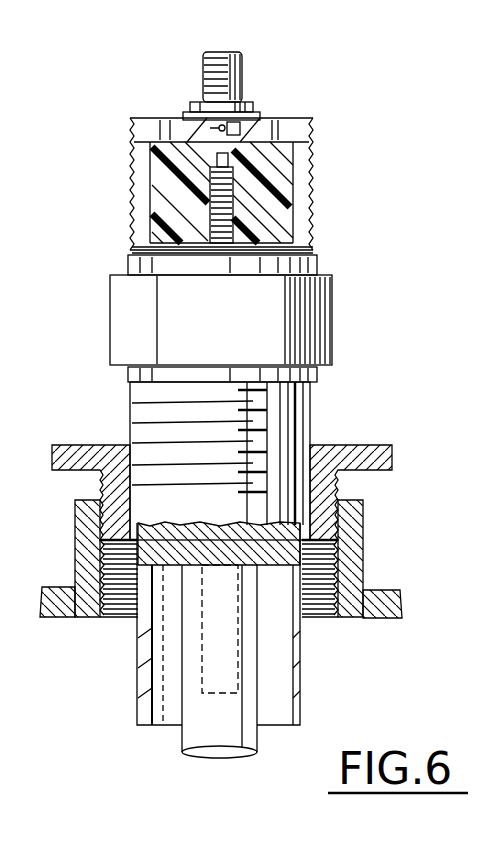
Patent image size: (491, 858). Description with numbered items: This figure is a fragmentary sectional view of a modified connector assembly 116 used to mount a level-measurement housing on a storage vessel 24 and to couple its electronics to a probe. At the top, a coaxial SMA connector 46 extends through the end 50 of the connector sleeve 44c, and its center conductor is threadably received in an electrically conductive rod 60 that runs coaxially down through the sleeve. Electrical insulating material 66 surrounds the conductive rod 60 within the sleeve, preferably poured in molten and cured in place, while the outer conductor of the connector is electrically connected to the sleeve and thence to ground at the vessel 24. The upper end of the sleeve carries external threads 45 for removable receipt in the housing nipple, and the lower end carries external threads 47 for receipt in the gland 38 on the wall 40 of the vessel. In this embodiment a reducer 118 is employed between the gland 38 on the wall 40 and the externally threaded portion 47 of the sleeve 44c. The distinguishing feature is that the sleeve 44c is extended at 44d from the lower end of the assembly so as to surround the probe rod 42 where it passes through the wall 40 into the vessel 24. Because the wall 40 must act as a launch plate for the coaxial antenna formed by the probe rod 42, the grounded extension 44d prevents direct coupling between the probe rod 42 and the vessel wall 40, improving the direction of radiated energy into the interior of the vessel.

The coaxial SMA connector 46 is at (238, 72).
The end of sleeve 50 is at (263, 118).
The external threads 45 is at (310, 165).
The electrical insulating material 66 is at (290, 210).
The electrically conductive rod 60 is at (187, 203).
The modified connector assembly 116 is at (338, 296).
The connector sleeve 44c is at (313, 398).
The external threads 47 is at (133, 418).
The reducer 118 is at (358, 455).
The gland 38 is at (357, 540).
The storage vessel 24 is at (57, 585).
The wall of vessel 40 is at (383, 595).
The sleeve extension 44d is at (302, 667).
The probe rod 42 is at (192, 735).